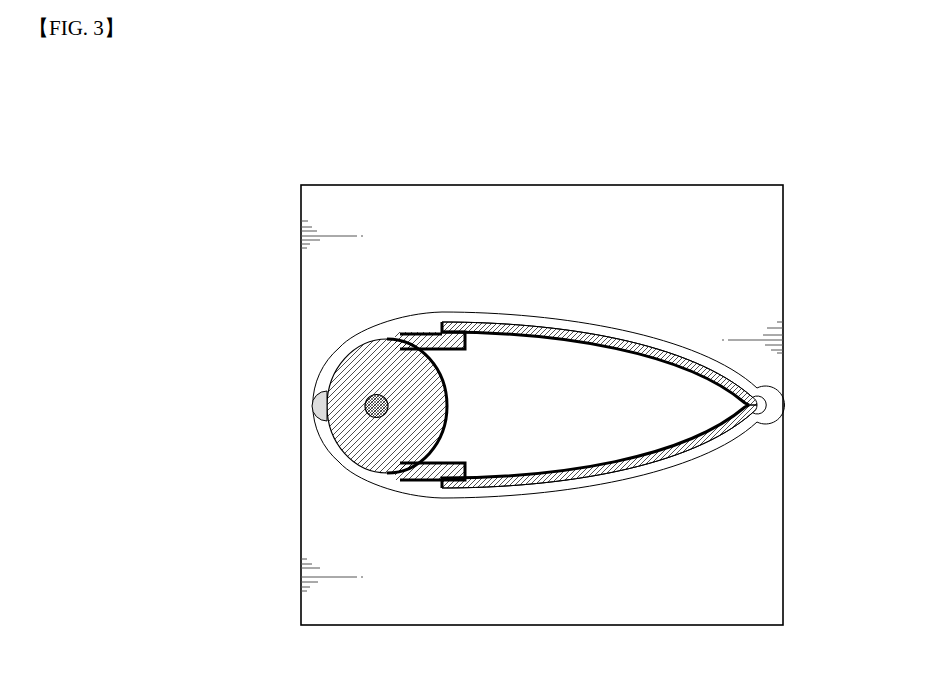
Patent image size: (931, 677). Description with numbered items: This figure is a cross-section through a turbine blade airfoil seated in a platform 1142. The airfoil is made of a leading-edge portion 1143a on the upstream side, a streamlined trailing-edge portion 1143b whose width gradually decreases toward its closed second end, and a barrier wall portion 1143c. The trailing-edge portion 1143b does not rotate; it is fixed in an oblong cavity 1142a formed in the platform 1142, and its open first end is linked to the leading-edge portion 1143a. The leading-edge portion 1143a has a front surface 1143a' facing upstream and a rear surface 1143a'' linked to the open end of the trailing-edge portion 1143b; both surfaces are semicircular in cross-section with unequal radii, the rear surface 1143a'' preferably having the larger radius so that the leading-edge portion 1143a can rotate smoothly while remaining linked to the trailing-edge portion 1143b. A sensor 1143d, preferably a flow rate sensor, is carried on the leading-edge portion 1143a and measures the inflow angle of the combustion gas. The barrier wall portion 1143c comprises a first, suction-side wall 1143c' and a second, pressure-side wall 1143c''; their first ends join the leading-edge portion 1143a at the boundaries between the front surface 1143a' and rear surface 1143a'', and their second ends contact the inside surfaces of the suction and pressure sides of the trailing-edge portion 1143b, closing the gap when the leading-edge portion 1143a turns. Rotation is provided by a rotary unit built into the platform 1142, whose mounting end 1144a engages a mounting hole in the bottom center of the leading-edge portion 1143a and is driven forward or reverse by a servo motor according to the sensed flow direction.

The platform 1142 is at (767, 553).
The oblong cavity 1142a is at (390, 327).
The leading-edge portion 1143a is at (245, 413).
The front surface 1143a' is at (300, 402).
The rear surface 1143a'' is at (300, 489).
The trailing-edge portion 1143b is at (738, 386).
The barrier wall portion 1143c is at (604, 275).
The first wall 1143c' is at (590, 261).
The second wall 1143c'' is at (599, 303).
The sensor 1143d is at (312, 408).
The mounting end 1144a is at (374, 396).